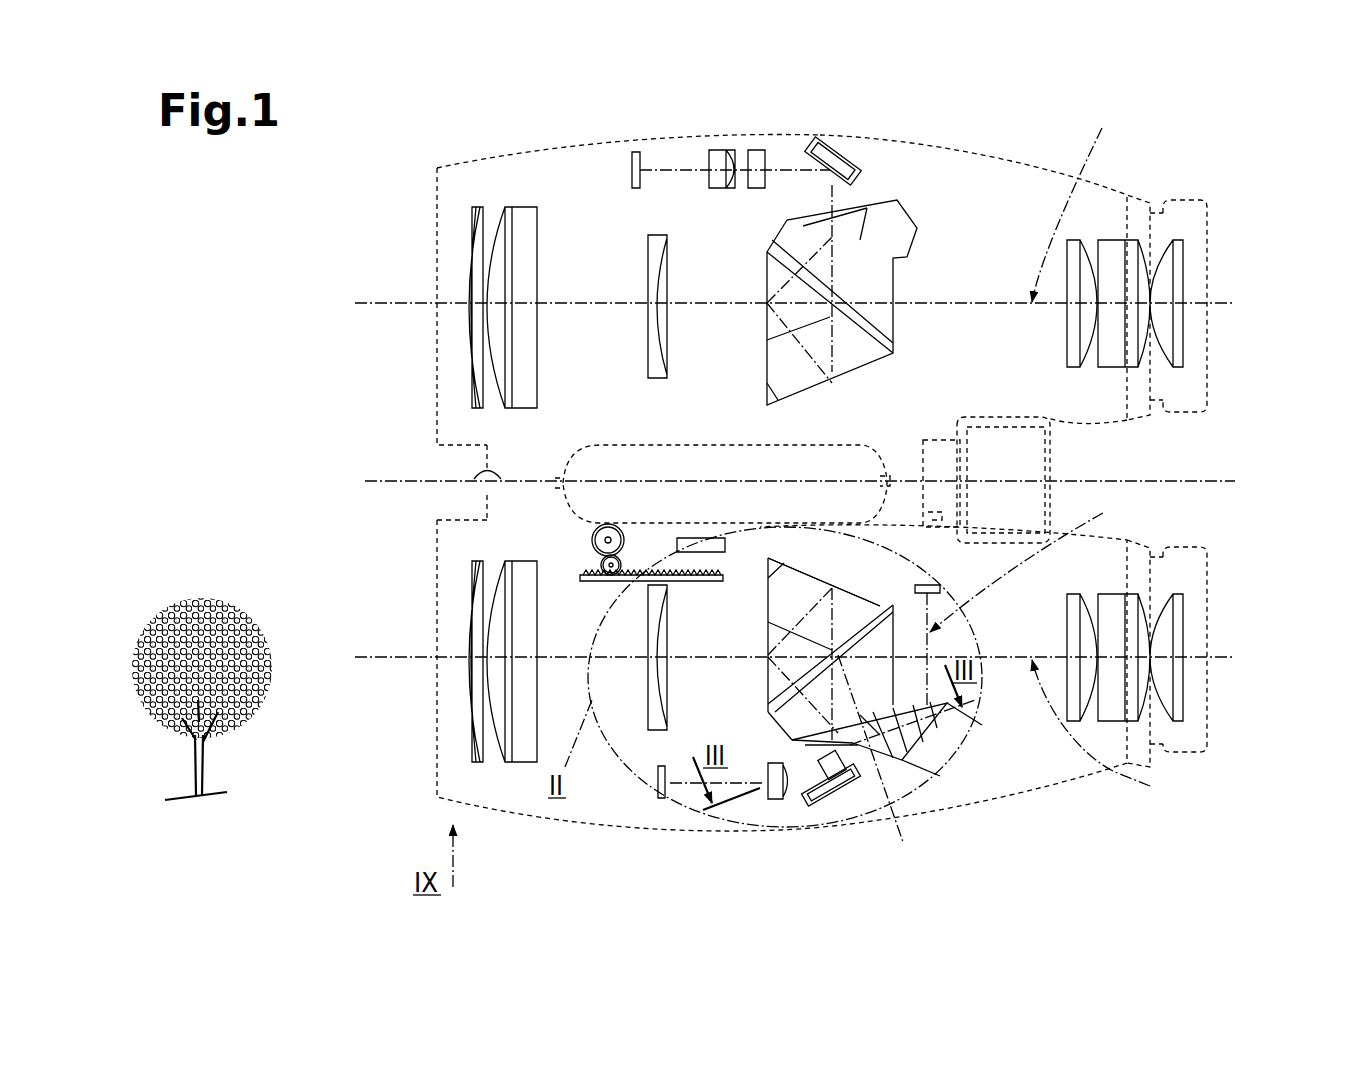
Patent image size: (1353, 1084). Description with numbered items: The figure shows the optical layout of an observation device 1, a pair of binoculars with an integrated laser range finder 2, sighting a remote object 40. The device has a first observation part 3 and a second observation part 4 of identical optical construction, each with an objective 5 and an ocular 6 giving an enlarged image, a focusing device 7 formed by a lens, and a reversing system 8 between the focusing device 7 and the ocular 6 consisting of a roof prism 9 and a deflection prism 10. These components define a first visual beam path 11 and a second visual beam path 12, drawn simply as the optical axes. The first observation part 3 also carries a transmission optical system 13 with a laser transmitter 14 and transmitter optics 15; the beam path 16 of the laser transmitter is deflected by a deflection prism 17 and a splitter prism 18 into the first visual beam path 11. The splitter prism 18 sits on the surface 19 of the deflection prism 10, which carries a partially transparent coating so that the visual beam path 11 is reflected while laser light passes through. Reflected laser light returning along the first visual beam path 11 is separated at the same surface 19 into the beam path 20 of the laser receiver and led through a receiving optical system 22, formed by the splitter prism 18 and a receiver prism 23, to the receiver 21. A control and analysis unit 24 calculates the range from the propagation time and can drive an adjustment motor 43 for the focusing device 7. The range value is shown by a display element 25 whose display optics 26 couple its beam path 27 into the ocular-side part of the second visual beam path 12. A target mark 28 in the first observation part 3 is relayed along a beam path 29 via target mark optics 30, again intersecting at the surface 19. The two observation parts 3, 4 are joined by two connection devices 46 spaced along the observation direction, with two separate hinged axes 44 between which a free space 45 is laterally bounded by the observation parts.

The observation device 1 is at (392, 815).
The laser range finder 2 is at (857, 738).
The first observation part 3 is at (1023, 813).
The second observation part 4 is at (1030, 160).
The objective 5 is at (432, 268).
The ocular 6 is at (1177, 573).
The focusing device 7 is at (657, 718).
The reversing system 8 is at (797, 550).
The roof prism 9 is at (790, 597).
The deflection prism 10 is at (785, 727).
The first visual beam path 11 is at (1103, 731).
The second visual beam path 12 is at (1075, 201).
The transmission optical system 13 is at (927, 755).
The laser transmitter 14 is at (857, 800).
The transmitter optics 15 is at (931, 800).
The beam path of the laser transmitter 16 is at (882, 760).
The deflection prism 17 is at (965, 727).
The splitter prism 18 is at (895, 748).
The surface 19 is at (800, 747).
The beam path of the laser receiver 20 is at (1029, 565).
The receiver 21 is at (908, 586).
The receiving optical system 22 is at (984, 728).
The receiver prism 23 is at (940, 775).
The control and analysis unit 24 is at (733, 553).
The display element 25 is at (633, 150).
The display optics 26 is at (795, 150).
The beam path of the display optics 27 is at (783, 167).
The target mark 28 is at (660, 790).
The beam path to the target mark 29 is at (697, 782).
The target mark optics 30 is at (779, 813).
The object 40 is at (175, 567).
The adjustment motor 43 is at (545, 540).
The hinged axes 44 is at (450, 483).
The free space 45 is at (650, 467).
The connection devices 46 is at (427, 460).